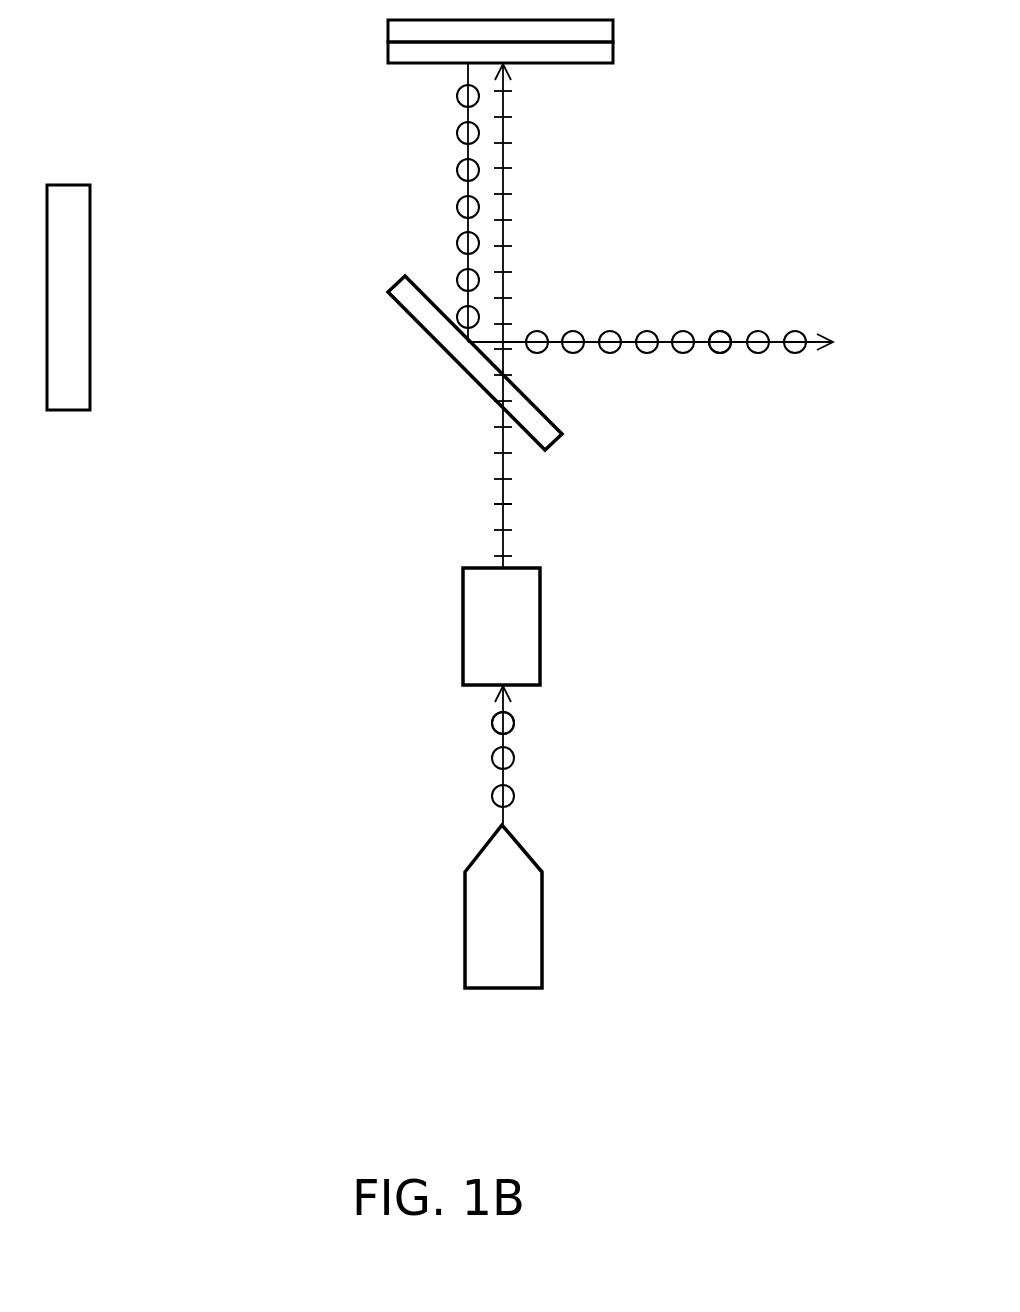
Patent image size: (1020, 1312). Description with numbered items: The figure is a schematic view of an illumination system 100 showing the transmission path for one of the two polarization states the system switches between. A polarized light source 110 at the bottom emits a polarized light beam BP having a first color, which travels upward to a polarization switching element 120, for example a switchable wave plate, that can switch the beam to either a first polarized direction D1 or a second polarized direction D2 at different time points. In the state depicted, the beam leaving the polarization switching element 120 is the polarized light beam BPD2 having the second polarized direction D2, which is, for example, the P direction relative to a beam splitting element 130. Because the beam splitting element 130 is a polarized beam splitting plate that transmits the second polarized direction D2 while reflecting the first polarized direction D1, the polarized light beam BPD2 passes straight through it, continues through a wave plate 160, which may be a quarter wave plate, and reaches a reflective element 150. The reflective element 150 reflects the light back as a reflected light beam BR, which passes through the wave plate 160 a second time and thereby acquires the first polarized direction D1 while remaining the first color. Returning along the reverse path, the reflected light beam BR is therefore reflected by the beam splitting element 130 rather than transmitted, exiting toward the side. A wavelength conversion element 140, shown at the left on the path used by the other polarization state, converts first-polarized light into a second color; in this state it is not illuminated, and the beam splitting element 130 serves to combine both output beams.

The illumination system 100 is at (823, 1081).
The polarized light source 110 is at (545, 925).
The polarization switching element 120 is at (543, 625).
The beam splitting element 130 is at (552, 437).
The wavelength conversion element 140 is at (67, 412).
The reflective element 150 is at (613, 33).
The wave plate 160 is at (613, 50).
The polarized light beam BP is at (492, 777).
The first polarized direction D1 is at (720, 331).
The second polarized direction D2 is at (497, 505).
The polarized light beam having the second polarized direction BPD2 is at (497, 467).
The reflected light beam BR is at (777, 331).